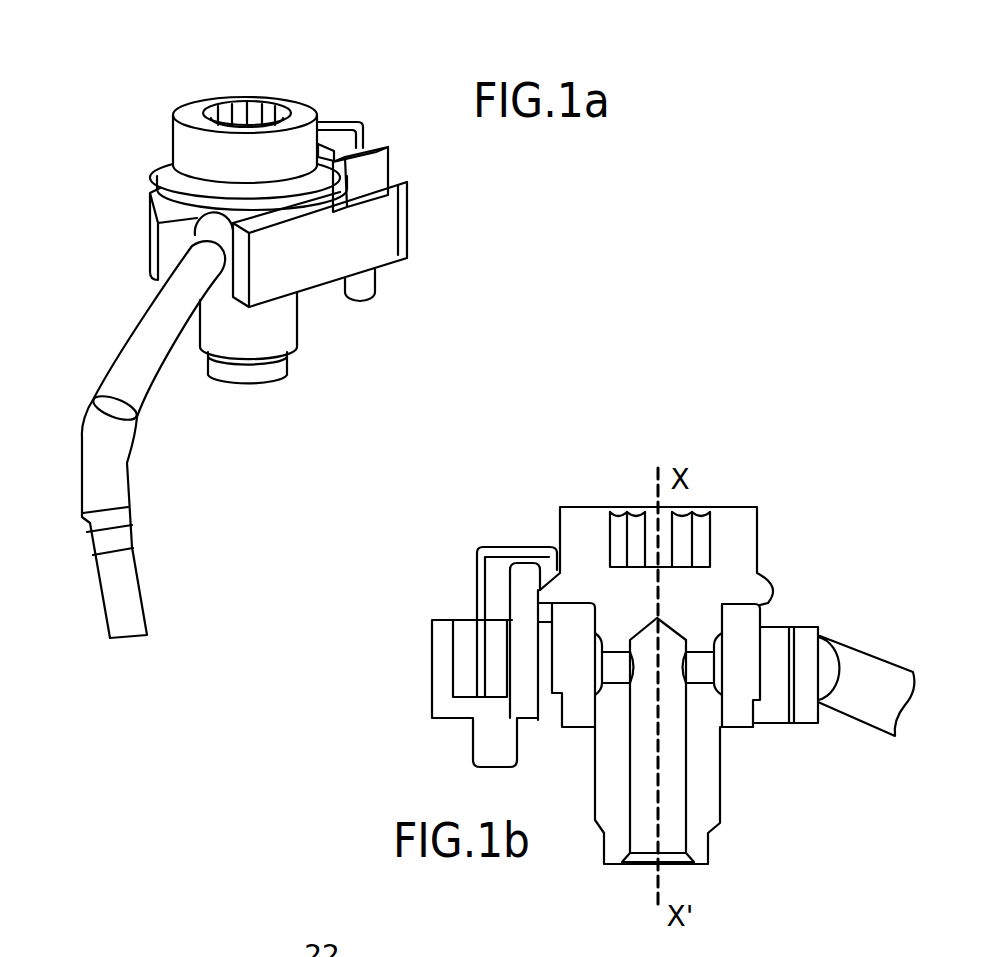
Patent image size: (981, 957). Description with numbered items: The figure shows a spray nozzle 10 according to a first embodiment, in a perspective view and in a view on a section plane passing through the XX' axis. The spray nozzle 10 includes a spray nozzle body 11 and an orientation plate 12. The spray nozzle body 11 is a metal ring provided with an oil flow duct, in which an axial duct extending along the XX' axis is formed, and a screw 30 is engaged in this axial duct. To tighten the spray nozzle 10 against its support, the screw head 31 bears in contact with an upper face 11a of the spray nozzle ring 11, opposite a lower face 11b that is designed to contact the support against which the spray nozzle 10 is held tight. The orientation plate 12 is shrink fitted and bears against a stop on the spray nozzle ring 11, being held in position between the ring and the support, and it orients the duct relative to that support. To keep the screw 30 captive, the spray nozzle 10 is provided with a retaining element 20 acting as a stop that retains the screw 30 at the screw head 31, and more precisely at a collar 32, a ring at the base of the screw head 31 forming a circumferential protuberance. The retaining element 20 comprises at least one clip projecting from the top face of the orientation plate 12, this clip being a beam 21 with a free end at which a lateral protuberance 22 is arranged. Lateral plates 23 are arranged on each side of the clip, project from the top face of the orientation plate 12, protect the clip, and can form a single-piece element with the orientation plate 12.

In FIG. 1a, the spray nozzle 10 is at (128, 144).
In FIG. 1b, the spray nozzle 10 is at (417, 523).
In FIG. 1b, the spray nozzle body 11 is at (750, 660).
In FIG. 1b, the upper face 11a is at (732, 602).
In FIG. 1b, the lower face 11b is at (735, 728).
In FIG. 1a, the orientation plate 12 is at (397, 228).
In FIG. 1b, the retaining element 20 is at (498, 677).
In FIG. 1b, the beam 21 is at (513, 614).
In FIG. 1b, the lateral protuberance 22 is at (530, 578).
In FIG. 1a, the lateral plates 23 is at (385, 142).
In FIG. 1a, the screw 30 is at (208, 97).
In FIG. 1b, the screw 30 is at (608, 507).
In FIG. 1a, the screw head 31 is at (292, 97).
In FIG. 1b, the screw head 31 is at (735, 513).
In FIG. 1b, the collar 32 is at (760, 590).